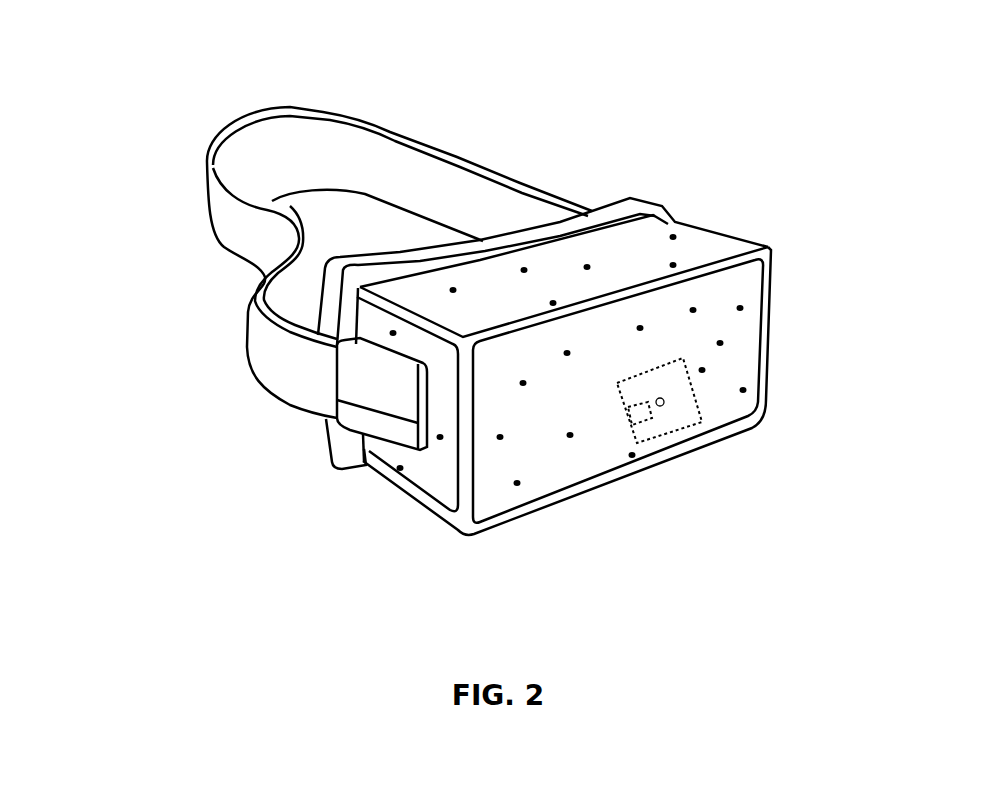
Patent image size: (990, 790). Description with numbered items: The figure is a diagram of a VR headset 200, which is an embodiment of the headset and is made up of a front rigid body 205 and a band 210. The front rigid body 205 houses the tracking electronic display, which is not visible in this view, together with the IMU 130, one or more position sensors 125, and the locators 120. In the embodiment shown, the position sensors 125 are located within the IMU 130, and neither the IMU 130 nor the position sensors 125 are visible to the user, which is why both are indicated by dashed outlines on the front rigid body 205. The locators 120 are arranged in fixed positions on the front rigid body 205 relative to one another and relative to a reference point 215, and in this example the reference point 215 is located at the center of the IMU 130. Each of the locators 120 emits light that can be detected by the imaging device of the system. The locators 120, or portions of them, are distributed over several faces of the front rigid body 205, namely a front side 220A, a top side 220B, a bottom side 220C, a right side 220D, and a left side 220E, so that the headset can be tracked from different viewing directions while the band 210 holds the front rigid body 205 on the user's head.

The VR headset 200 is at (93, 108).
The band 210 is at (493, 172).
The front rigid body 205 is at (546, 384).
The front side 220A is at (503, 508).
The top side 220B is at (425, 290).
The bottom side 220C is at (395, 508).
The right side 220D is at (432, 472).
The left side 220E is at (745, 240).
The locators 120 is at (750, 386).
The position sensors 125 is at (636, 430).
The IMU 130 is at (714, 421).
The reference point 215 is at (664, 414).